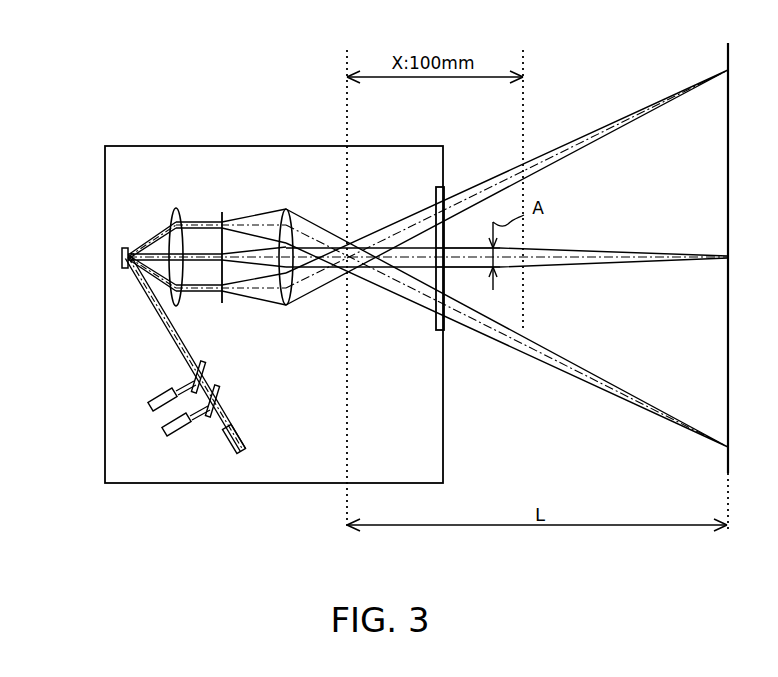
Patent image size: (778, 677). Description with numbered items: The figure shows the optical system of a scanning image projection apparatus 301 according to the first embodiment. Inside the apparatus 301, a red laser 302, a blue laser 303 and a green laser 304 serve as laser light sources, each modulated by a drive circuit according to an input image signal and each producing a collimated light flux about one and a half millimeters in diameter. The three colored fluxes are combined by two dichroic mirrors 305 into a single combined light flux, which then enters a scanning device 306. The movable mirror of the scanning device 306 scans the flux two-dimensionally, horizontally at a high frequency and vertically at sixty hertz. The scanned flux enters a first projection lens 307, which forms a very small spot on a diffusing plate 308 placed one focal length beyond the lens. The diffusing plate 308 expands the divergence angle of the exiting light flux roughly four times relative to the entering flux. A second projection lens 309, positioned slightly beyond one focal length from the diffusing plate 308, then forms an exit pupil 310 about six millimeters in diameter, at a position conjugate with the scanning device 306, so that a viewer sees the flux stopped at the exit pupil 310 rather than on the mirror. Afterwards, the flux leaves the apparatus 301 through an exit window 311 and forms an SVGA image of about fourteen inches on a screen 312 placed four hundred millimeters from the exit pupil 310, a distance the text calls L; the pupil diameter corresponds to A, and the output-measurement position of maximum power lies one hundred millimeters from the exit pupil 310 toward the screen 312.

The scanning image projection apparatus 301 is at (140, 140).
The red laser 302 is at (152, 399).
The blue laser 303 is at (163, 424).
The green laser 304 is at (243, 452).
The dichroic mirror 305 is at (210, 375).
The scanning device 306 is at (127, 267).
The first projection lens 307 is at (173, 216).
The diffusing plate 308 is at (222, 212).
The second projection lens 309 is at (286, 209).
The exit pupil 310 is at (347, 248).
The exit window 311 is at (445, 335).
The screen 312 is at (728, 52).